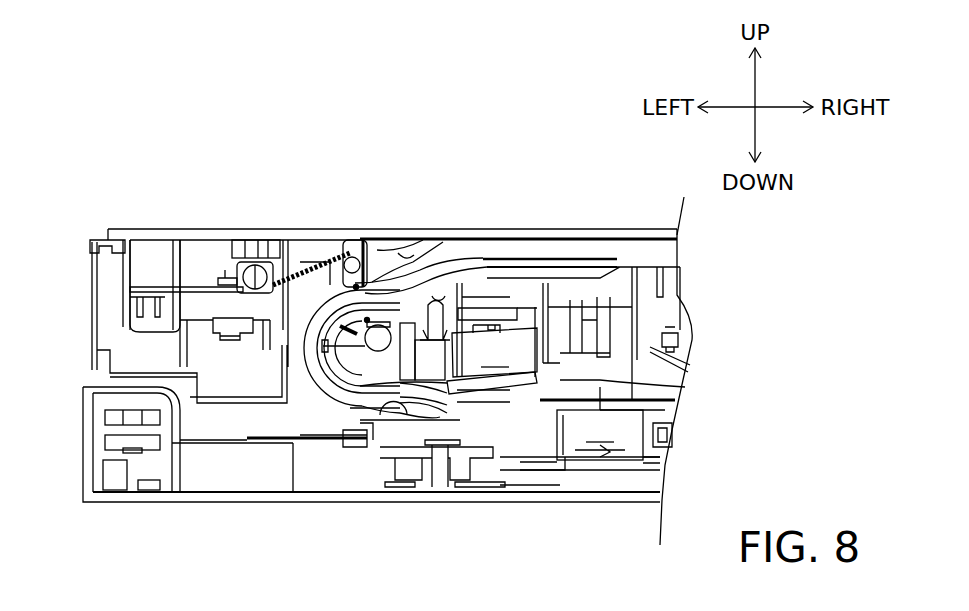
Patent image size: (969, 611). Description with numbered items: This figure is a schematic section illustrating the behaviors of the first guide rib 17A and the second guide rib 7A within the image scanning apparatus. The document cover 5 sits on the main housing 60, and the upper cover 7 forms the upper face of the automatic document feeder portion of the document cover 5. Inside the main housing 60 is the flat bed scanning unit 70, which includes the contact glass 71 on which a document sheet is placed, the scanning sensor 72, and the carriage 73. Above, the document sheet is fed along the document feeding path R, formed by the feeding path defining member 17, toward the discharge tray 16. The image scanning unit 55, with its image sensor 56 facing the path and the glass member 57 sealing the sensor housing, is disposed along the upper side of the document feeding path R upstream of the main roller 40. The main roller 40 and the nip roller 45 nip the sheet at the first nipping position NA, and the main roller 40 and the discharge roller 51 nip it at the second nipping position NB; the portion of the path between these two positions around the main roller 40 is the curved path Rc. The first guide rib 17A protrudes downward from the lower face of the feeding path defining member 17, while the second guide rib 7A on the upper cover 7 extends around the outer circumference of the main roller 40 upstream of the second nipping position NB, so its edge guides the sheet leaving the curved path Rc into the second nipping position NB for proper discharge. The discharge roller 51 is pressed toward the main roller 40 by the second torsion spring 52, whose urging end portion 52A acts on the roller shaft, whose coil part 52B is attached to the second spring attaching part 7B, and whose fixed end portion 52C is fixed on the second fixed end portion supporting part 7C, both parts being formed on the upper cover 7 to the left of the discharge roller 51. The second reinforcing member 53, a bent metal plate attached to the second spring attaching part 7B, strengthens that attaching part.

The document cover 5 is at (131, 222).
The second reinforcing member 53 is at (222, 280).
The second spring attaching part 7B is at (258, 240).
The second torsion spring 52 is at (288, 262).
The second guide rib 7A is at (308, 262).
The urging end portion 52A is at (357, 240).
The discharge roller 51 is at (398, 253).
The second nipping position NB is at (430, 262).
The upper cover 7 is at (464, 238).
The image scanning unit 55 is at (478, 308).
The feeding path defining member 17 is at (595, 343).
The discharge tray 16 is at (655, 350).
The document feeding path R is at (640, 350).
The fixed end portion 52C is at (190, 268).
The second fixed end portion supporting part 7C is at (160, 322).
The coil part 52B is at (245, 345).
The curved path Rc is at (295, 355).
The image sensor 56 is at (494, 342).
The scanning sensor 72 is at (591, 430).
The main housing 60 is at (168, 495).
The main roller 40 is at (335, 385).
The first nipping position NA is at (385, 393).
The nip roller 45 is at (367, 395).
The first guide rib 17A is at (430, 380).
The glass member 57 is at (485, 395).
The carriage 73 is at (548, 390).
The scanning unit 70 is at (603, 472).
The contact glass 71 is at (633, 400).